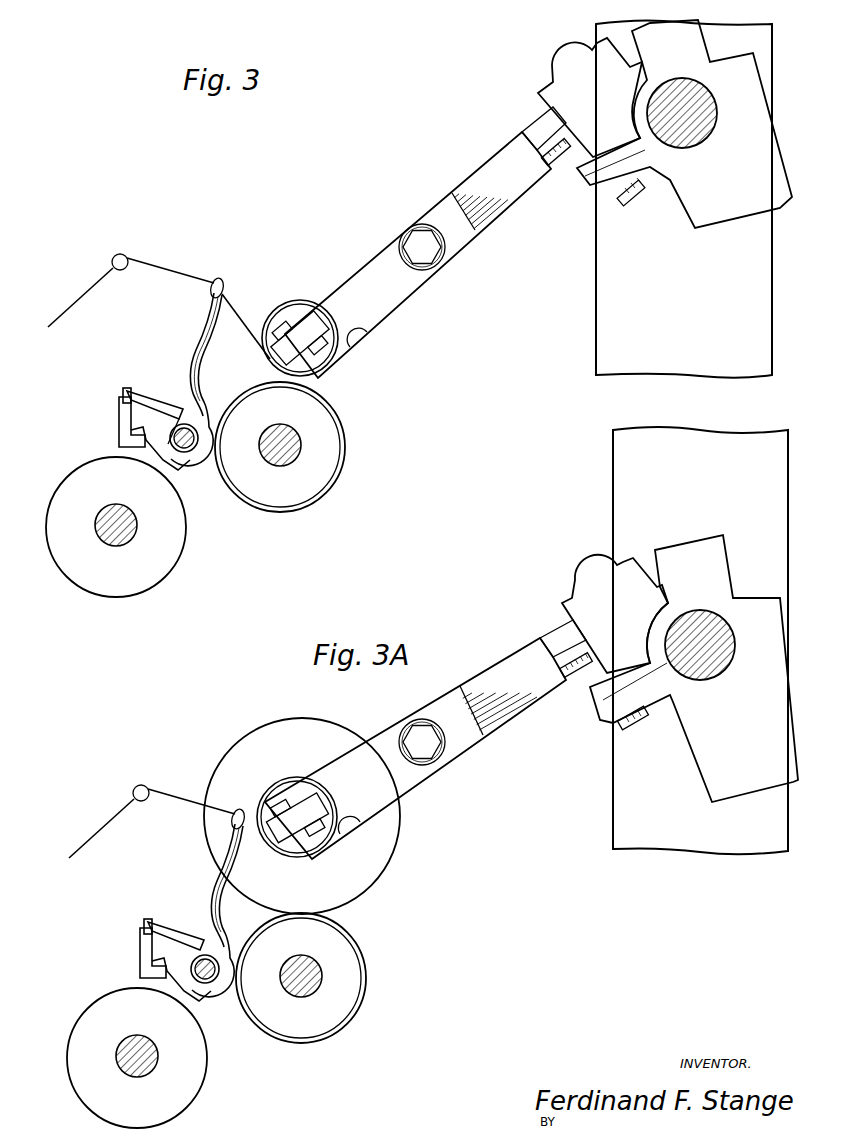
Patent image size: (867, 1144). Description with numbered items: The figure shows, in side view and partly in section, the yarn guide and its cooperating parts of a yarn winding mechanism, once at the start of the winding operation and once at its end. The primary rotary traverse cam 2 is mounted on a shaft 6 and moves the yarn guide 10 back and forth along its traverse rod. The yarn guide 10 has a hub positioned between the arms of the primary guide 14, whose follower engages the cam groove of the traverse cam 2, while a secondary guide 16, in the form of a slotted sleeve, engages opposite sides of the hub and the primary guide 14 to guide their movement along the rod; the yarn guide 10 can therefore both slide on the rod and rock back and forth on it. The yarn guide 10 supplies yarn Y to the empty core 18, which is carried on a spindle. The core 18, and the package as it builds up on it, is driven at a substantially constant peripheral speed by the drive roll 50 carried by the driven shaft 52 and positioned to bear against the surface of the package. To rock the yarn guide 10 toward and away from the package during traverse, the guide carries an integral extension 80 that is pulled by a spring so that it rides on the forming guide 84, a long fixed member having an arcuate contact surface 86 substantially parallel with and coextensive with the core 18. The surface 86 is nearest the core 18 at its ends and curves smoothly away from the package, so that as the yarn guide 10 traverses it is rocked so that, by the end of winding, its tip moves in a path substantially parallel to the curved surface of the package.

In FIG. 3, the primary rotary traverse cam 2 is at (121, 588).
In FIG. 3A, the primary rotary traverse cam 2 is at (150, 1058).
In FIG. 3, the shaft 6 is at (119, 540).
In FIG. 3A, the shaft 6 is at (137, 1071).
In FIG. 3, the yarn guide 10 is at (207, 312).
In FIG. 3A, the yarn guide 10 is at (209, 902).
In FIG. 3, the primary guide 14 is at (213, 417).
In FIG. 3, the secondary guide 16 is at (187, 448).
In FIG. 3A, the secondary guide 16 is at (208, 989).
In FIG. 3, the core 18 is at (300, 296).
In FIG. 3A, the core 18 is at (305, 776).
In FIG. 3, the drive roll 50 is at (340, 478).
In FIG. 3A, the drive roll 50 is at (317, 978).
In FIG. 3, the driven shaft 52 is at (274, 461).
In FIG. 3A, the driven shaft 52 is at (301, 990).
In FIG. 3, the extension 80 is at (160, 393).
In FIG. 3A, the extension 80 is at (176, 926).
In FIG. 3, the forming guide 84 is at (118, 421).
In FIG. 3A, the forming guide 84 is at (132, 953).
In FIG. 3, the arcuate contact surface 86 is at (120, 390).
In FIG. 3A, the arcuate contact surface 86 is at (129, 921).
In FIG. 3, the yarn Y is at (165, 265).
In FIG. 3A, the yarn Y is at (166, 790).